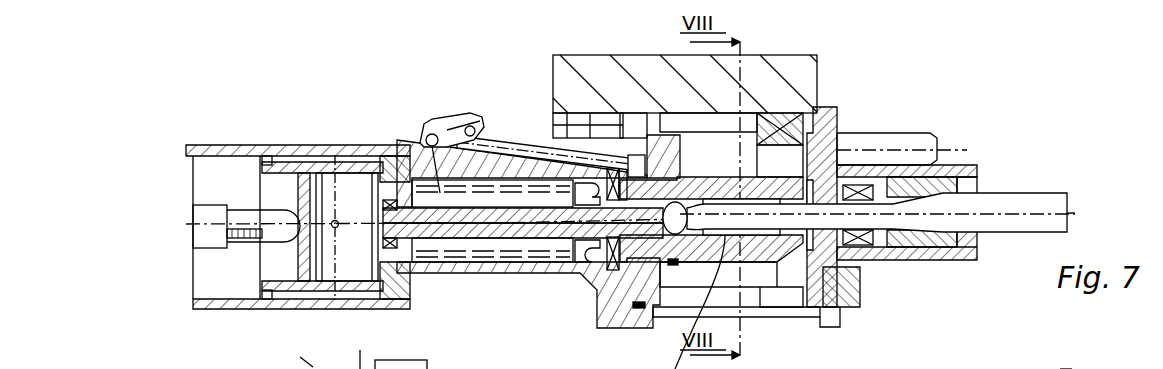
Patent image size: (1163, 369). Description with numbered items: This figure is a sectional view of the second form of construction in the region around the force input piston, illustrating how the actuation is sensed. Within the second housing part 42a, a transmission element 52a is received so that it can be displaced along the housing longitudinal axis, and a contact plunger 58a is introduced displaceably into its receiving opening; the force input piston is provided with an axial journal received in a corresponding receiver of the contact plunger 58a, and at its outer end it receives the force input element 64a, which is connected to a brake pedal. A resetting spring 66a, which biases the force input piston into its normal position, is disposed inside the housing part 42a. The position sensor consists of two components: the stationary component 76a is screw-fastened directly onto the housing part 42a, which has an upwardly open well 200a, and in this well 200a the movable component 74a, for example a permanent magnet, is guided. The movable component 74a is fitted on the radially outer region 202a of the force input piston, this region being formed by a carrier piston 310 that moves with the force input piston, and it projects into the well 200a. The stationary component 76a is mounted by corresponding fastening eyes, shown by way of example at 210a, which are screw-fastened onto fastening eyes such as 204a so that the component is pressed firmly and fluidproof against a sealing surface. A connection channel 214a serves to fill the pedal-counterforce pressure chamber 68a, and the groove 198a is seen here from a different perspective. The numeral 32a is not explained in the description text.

The second housing part 42a is at (224, 147).
The end piece 32a is at (205, 217).
The groove 198a is at (240, 242).
The transmission element 52a is at (313, 162).
The contact plunger 58a is at (515, 228).
The resetting spring 66a is at (445, 262).
The connection channel 214a is at (497, 128).
The pedal-counterforce pressure chamber 68a is at (420, 138).
The upwardly open well 200a is at (630, 85).
The stationary component of the position sensor 76a is at (800, 62).
The movable component of the position sensor 74a is at (817, 105).
The radially outer region 202a is at (825, 298).
The carrier piston 310 is at (863, 262).
The force input element 64a is at (1017, 197).
The corresponding fastening eye 210a is at (305, 358).
The fastening eye 204a is at (1072, 368).